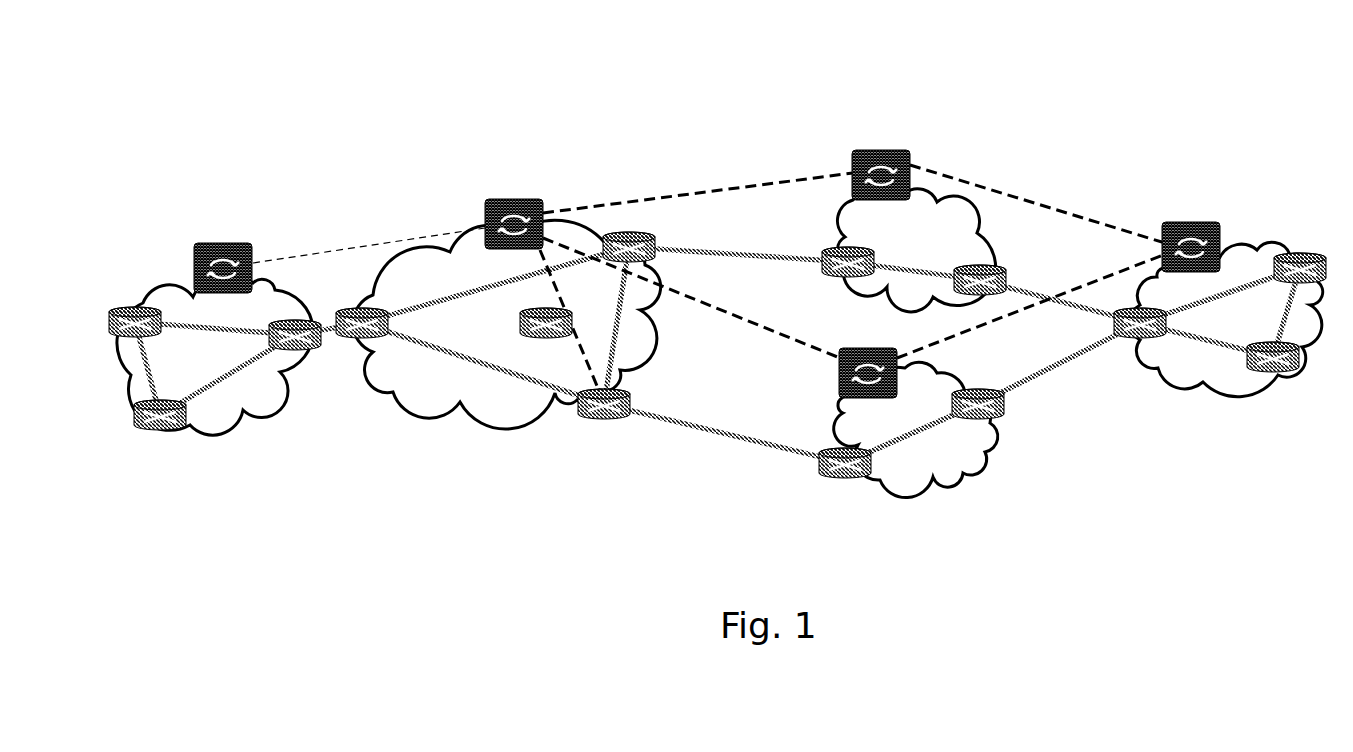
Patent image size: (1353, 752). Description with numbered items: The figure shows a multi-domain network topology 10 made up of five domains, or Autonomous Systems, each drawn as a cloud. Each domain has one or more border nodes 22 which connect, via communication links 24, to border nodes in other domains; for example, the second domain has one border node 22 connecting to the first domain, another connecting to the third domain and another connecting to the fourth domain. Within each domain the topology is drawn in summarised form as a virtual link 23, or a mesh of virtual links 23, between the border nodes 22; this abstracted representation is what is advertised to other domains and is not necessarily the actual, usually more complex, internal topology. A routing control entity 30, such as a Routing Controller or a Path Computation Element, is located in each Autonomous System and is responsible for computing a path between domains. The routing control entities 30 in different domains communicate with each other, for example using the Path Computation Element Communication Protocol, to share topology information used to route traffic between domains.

The multi-domain network topology 10 is at (647, 93).
The border node 22 is at (356, 304).
The virtual link 23 is at (500, 370).
The communication link 24 is at (328, 332).
The routing control entity 30 is at (485, 205).